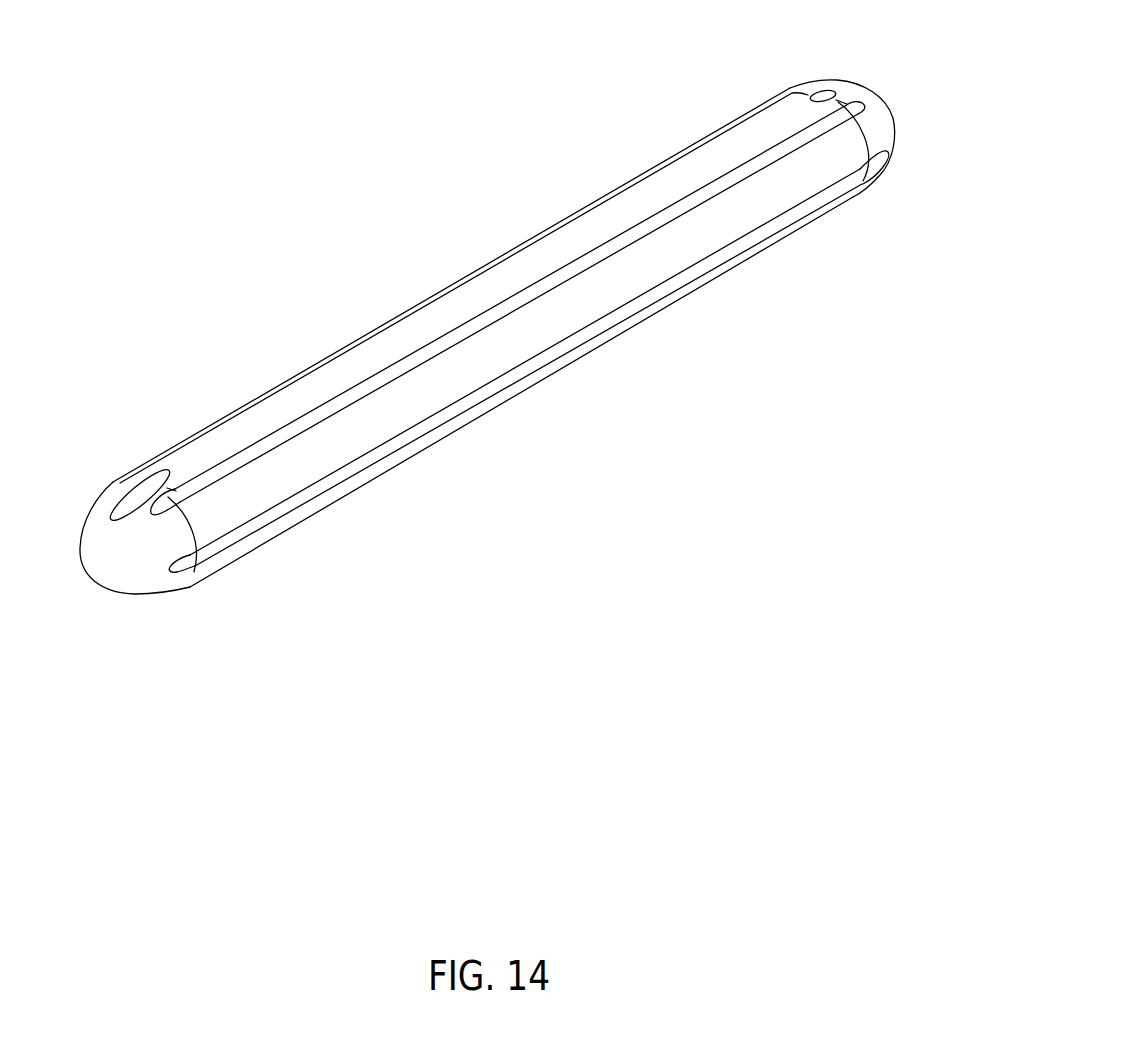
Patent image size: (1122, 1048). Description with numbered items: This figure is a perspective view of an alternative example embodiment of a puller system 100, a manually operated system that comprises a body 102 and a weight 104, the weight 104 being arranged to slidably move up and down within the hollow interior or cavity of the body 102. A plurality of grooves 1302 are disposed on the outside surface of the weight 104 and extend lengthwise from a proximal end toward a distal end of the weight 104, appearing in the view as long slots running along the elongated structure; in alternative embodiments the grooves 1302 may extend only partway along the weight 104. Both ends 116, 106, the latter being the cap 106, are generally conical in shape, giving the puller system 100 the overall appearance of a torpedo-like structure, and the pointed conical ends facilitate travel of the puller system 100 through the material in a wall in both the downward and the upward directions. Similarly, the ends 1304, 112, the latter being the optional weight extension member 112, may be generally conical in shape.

The puller system 100 is at (574, 411).
The body 102 is at (491, 337).
The weight 104 is at (470, 294).
The cap 106 is at (862, 112).
The weight extension member 112 is at (870, 100).
The end 116 is at (102, 514).
The end 1304 is at (95, 537).
The grooves 1302 is at (290, 433).